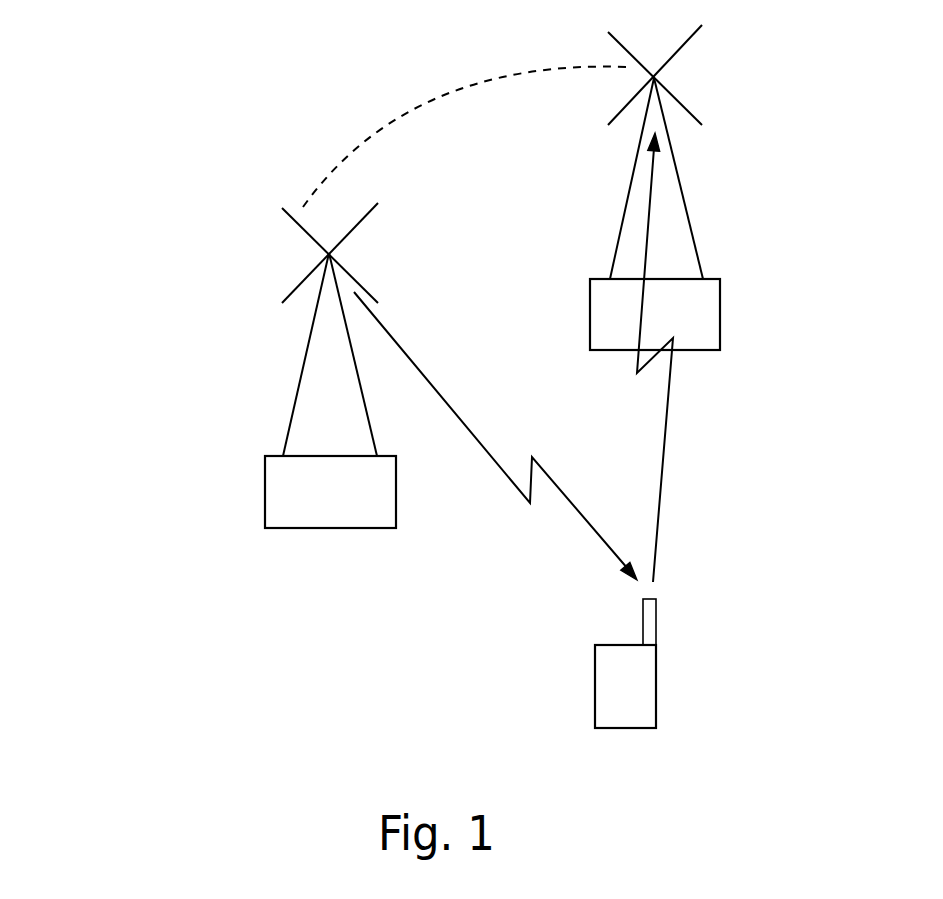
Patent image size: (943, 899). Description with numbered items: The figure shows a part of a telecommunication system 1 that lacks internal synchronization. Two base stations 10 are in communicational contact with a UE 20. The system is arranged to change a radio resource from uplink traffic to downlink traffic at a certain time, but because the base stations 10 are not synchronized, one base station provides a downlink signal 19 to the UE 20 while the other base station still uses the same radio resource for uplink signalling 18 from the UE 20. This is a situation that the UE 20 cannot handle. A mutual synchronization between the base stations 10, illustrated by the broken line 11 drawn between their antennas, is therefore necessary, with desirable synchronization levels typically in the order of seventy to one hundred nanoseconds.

The telecommunication system 1 is at (164, 122).
The base station 10 is at (288, 493).
The broken line 11 is at (437, 97).
The uplink signalling 18 is at (662, 452).
The downlink signal 19 is at (588, 523).
The UE 20 is at (643, 712).